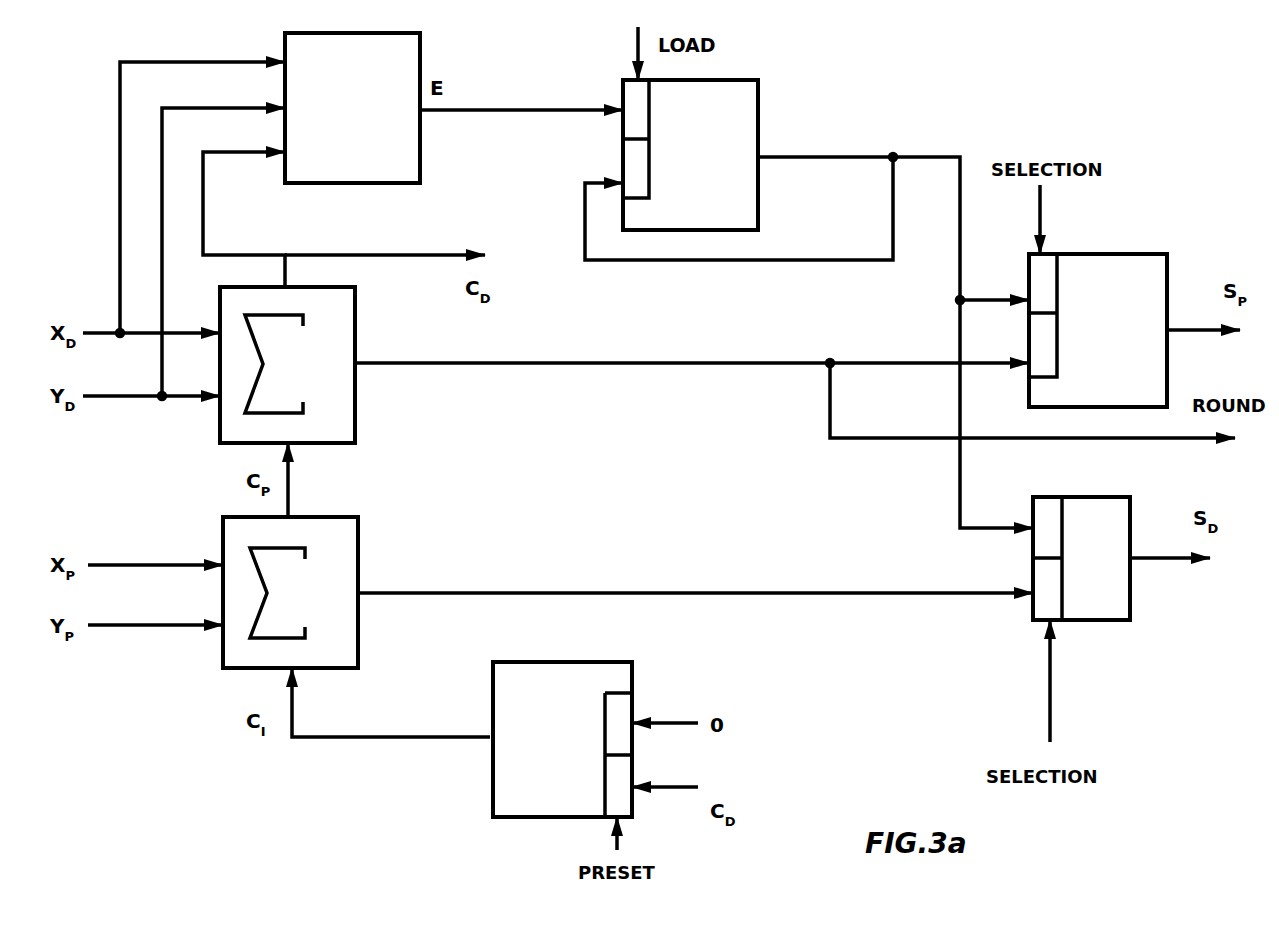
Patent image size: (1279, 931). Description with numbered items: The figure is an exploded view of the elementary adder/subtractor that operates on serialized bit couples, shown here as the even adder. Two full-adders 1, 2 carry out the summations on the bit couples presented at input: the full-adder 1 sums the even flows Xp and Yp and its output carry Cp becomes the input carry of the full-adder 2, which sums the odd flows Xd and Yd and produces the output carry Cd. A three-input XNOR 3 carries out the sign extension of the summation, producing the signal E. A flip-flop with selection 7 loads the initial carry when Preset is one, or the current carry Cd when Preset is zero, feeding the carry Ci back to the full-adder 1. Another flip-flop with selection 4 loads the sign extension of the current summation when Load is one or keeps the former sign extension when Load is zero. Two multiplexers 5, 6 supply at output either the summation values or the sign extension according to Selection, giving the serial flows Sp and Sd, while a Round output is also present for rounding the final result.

The full-adder 1 is at (290, 592).
The full-adder 2 is at (287, 365).
The XNOR with three inputs 3 is at (352, 108).
The flip-flop with selection 4 is at (690, 155).
The multiplexer 5 is at (1098, 330).
The multiplexer 6 is at (1081, 558).
The flip-flop with selection 7 is at (562, 739).